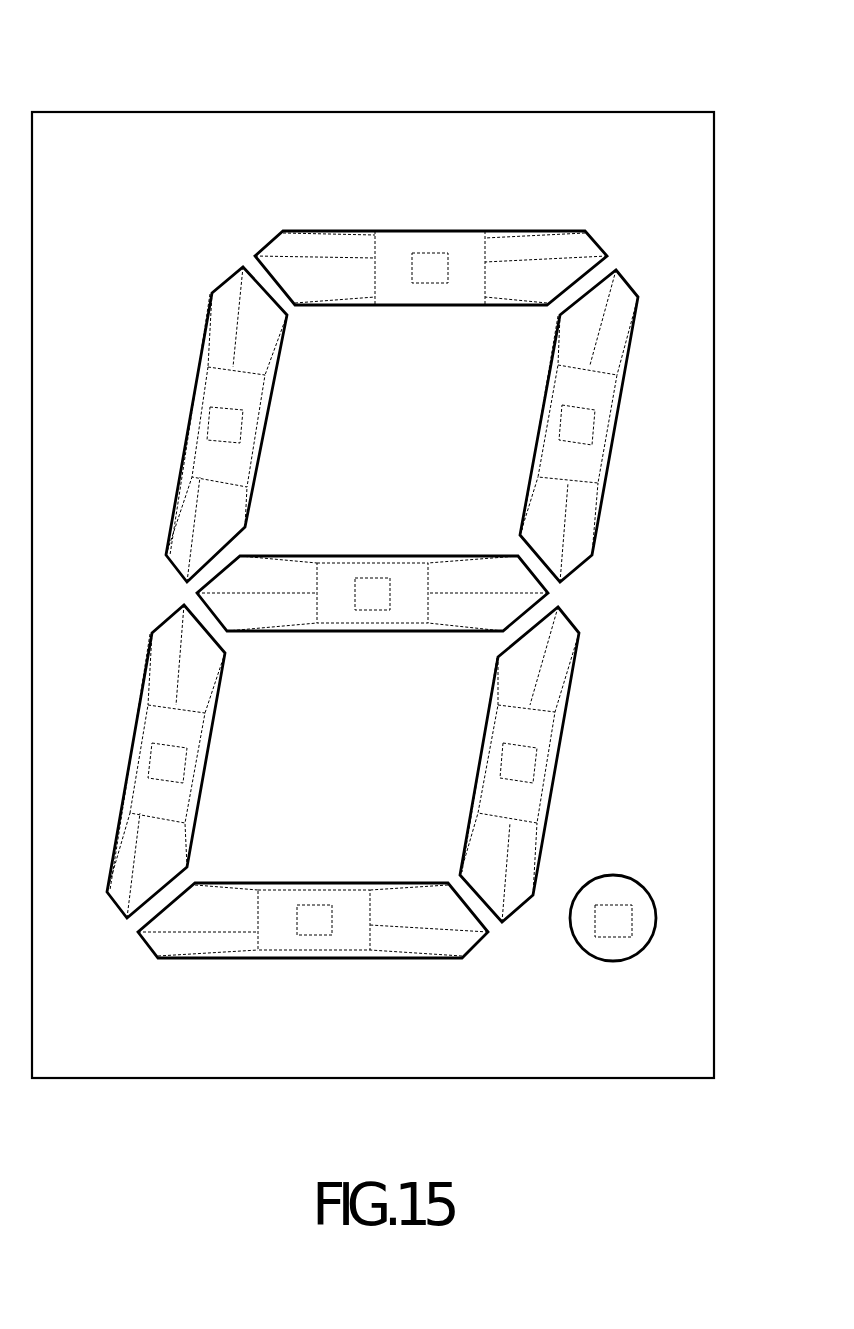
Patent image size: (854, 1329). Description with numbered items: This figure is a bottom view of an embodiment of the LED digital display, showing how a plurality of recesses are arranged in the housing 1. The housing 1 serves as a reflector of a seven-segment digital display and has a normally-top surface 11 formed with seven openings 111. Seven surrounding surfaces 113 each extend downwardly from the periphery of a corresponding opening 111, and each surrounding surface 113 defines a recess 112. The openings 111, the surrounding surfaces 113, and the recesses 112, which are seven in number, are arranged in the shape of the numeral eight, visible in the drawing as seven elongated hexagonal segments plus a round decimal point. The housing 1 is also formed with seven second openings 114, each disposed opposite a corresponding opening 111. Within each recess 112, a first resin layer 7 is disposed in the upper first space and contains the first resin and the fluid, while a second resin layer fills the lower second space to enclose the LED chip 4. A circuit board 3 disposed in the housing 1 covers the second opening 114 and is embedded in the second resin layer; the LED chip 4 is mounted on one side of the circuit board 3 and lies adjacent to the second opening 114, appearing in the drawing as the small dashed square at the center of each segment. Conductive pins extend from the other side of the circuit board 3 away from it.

The housing 1 is at (628, 95).
The normally-top surface 11 is at (400, 125).
The opening 111 is at (490, 230).
The recess 112 is at (197, 505).
The surrounding surface 113 is at (225, 330).
The second opening 114 is at (198, 383).
The first resin layer 7 is at (193, 432).
The circuit board 3 is at (570, 462).
The LED chip 4 is at (430, 258).